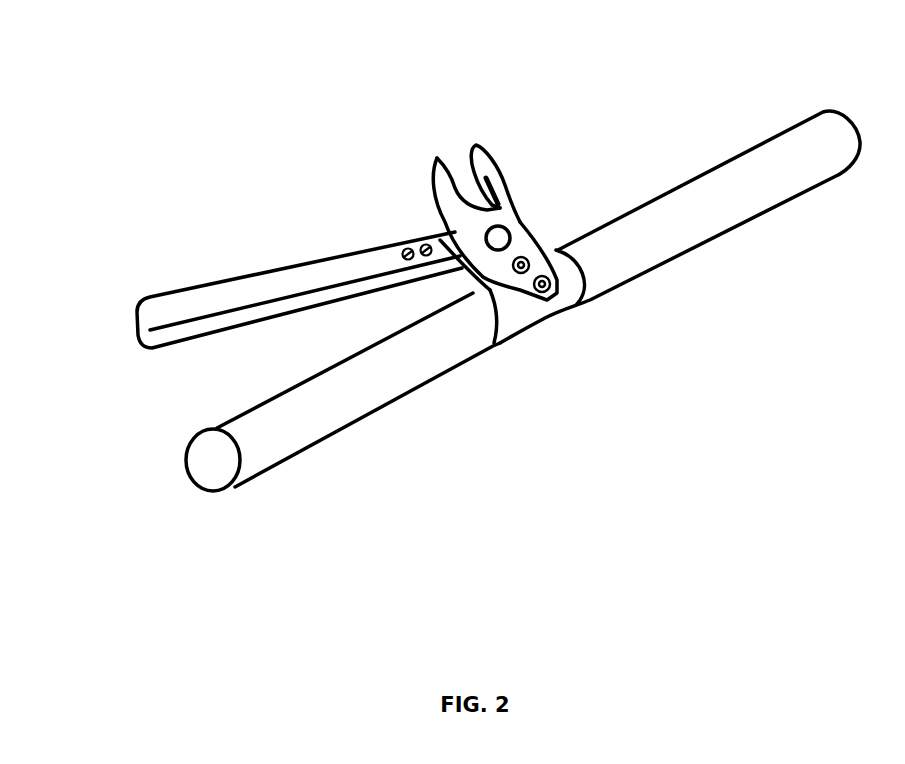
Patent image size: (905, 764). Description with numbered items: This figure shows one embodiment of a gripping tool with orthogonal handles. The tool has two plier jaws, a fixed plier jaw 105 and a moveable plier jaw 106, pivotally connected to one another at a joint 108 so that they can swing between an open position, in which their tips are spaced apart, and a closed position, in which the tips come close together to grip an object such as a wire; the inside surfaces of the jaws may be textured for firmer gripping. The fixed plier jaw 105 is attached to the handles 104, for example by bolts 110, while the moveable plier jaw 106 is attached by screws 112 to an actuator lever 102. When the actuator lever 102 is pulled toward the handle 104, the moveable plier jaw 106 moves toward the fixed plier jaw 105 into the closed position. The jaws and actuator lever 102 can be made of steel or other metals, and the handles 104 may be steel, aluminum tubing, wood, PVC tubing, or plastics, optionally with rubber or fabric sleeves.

The actuator lever 102 is at (293, 285).
The handles 104 is at (395, 370).
The fixed plier jaw 105 is at (443, 195).
The moveable plier jaw 106 is at (478, 163).
The joint 108 is at (502, 241).
The bolts 110 is at (542, 282).
The screws 112 is at (424, 248).